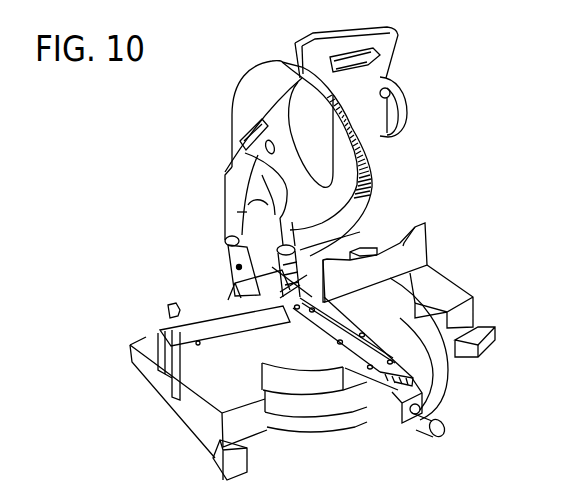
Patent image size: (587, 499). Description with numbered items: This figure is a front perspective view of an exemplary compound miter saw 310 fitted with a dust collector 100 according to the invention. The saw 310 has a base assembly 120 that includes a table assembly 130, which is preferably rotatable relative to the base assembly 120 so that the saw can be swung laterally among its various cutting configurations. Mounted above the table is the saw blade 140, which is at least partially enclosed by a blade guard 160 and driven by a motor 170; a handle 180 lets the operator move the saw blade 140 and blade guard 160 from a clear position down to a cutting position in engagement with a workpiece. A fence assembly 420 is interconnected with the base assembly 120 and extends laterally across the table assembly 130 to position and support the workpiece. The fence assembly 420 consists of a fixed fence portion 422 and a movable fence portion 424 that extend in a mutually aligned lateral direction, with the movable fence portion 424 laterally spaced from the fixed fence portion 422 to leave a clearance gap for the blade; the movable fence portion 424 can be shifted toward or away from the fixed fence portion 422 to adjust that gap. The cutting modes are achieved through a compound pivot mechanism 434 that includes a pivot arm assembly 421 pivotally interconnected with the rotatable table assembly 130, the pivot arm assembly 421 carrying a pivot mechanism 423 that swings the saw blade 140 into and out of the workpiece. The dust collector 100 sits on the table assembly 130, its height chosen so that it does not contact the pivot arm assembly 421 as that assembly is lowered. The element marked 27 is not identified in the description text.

The dust collector 100 is at (270, 292).
The base assembly 120 is at (447, 298).
The table assembly 130 is at (396, 324).
The saw blade 140 is at (380, 150).
The blade guard 160 is at (380, 167).
The motor 170 is at (380, 109).
The handle 180 is at (395, 35).
The kerf slot 27 is at (330, 253).
The compound miter saw 310 is at (153, 175).
The fence assembly 420 is at (213, 294).
The pivot arm assembly 421 is at (221, 178).
The fixed fence portion 422 is at (399, 245).
The pivot mechanism 423 is at (277, 289).
The movable fence portion 424 is at (166, 332).
The compound pivot mechanism 434 is at (217, 232).